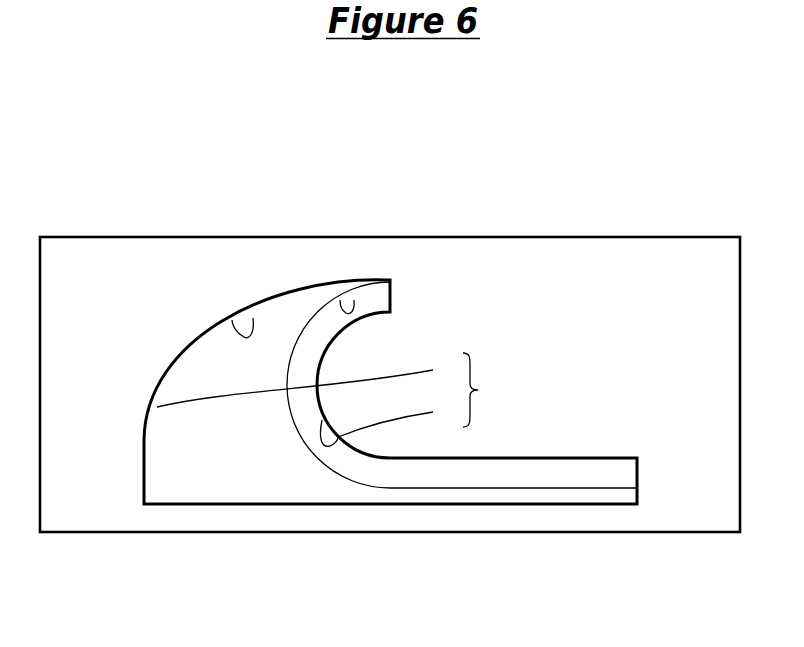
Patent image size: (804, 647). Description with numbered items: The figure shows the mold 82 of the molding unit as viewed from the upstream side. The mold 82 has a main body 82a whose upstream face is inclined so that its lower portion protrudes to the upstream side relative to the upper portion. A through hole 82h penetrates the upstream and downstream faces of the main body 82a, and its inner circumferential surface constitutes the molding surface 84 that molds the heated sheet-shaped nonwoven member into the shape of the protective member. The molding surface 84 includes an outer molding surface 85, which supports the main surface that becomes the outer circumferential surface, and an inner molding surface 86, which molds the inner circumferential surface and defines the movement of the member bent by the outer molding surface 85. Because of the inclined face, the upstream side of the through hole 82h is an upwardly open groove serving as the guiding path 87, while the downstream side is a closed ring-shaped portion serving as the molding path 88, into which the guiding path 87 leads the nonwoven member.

The mold 82 is at (212, 135).
The main body 82a is at (508, 237).
The through hole 82h is at (302, 478).
The molding surface 84 is at (485, 390).
The outer molding surface 85 is at (309, 382).
The inner molding surface 86 is at (390, 426).
The guiding path 87 is at (253, 318).
The molding path 88 is at (354, 300).